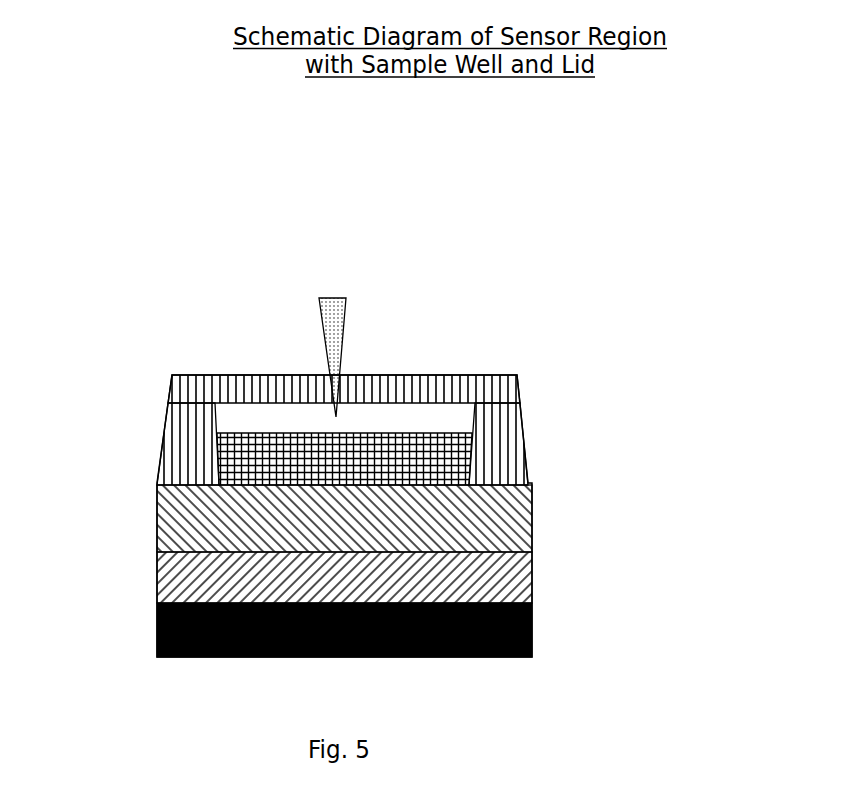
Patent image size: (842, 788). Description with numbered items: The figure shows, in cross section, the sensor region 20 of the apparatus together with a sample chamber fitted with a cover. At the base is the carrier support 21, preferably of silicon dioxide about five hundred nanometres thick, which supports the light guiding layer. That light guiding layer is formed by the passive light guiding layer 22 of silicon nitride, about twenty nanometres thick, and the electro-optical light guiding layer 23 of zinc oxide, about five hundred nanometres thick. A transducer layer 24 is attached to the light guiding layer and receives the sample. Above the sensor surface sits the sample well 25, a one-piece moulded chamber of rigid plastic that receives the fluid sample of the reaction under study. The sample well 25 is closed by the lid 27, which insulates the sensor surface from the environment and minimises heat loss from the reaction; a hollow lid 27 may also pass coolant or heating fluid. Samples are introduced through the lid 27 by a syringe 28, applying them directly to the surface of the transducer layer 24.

The sensor region 20 is at (295, 424).
The carrier support 21 is at (535, 627).
The passive light guiding layer 22 is at (533, 576).
The electro-optical light guiding layer 23 is at (533, 508).
The transducer layer 24 is at (398, 432).
The sample well 25 is at (521, 417).
The lid 27 is at (387, 375).
The syringe 28 is at (350, 308).